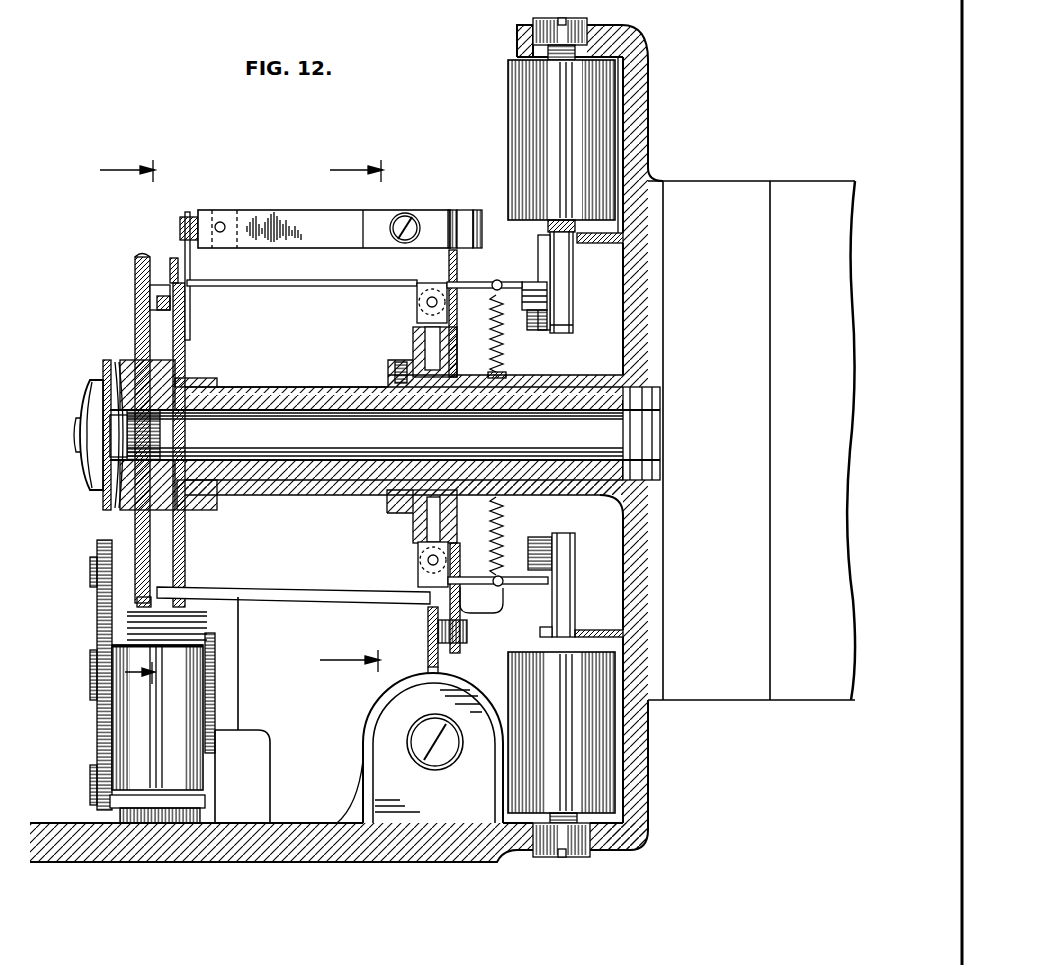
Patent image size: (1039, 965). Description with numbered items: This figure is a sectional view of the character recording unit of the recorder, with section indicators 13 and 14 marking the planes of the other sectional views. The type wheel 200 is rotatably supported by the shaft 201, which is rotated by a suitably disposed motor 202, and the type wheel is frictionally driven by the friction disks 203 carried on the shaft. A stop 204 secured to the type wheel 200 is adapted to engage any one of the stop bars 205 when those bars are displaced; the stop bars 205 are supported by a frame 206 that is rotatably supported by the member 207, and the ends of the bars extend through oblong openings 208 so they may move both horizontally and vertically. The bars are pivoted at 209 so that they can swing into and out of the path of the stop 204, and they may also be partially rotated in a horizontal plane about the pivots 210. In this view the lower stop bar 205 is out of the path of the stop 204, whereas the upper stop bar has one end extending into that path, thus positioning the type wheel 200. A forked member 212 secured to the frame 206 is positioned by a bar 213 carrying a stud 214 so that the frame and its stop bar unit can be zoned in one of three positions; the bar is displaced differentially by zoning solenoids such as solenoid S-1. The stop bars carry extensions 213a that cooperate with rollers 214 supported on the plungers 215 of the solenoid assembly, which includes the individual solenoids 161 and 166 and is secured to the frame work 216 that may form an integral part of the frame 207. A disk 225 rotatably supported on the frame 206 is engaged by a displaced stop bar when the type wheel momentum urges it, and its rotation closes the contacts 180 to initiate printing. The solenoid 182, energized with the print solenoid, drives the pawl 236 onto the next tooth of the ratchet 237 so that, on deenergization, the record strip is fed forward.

The frame work 216 is at (630, 44).
The motor 202 is at (790, 196).
The solenoid 161 is at (530, 103).
The solenoid 166 is at (580, 770).
The solenoid 182 is at (140, 772).
The contacts 180 is at (224, 223).
The type wheel 200 is at (135, 260).
The shaft 201 is at (262, 440).
The friction disks 203 is at (140, 364).
The stop 204 is at (156, 301).
The stop bars 205 is at (295, 288).
The frame 206 is at (300, 390).
The member 207 is at (585, 386).
The oblong openings 208 is at (174, 262).
The pivot 209 is at (426, 310).
The pivots 210 is at (426, 346).
The forked member 212 is at (457, 332).
The bar 213 is at (430, 633).
The extensions 213a is at (530, 284).
The rollers 214 is at (537, 546).
The plungers 215 is at (575, 552).
The disk 225 is at (189, 348).
The pawl 236 is at (215, 685).
The ratchet 237 is at (218, 746).
The zoning solenoid S-1 is at (362, 775).
The section line 13 is at (141, 425).
The section line 14 is at (365, 418).